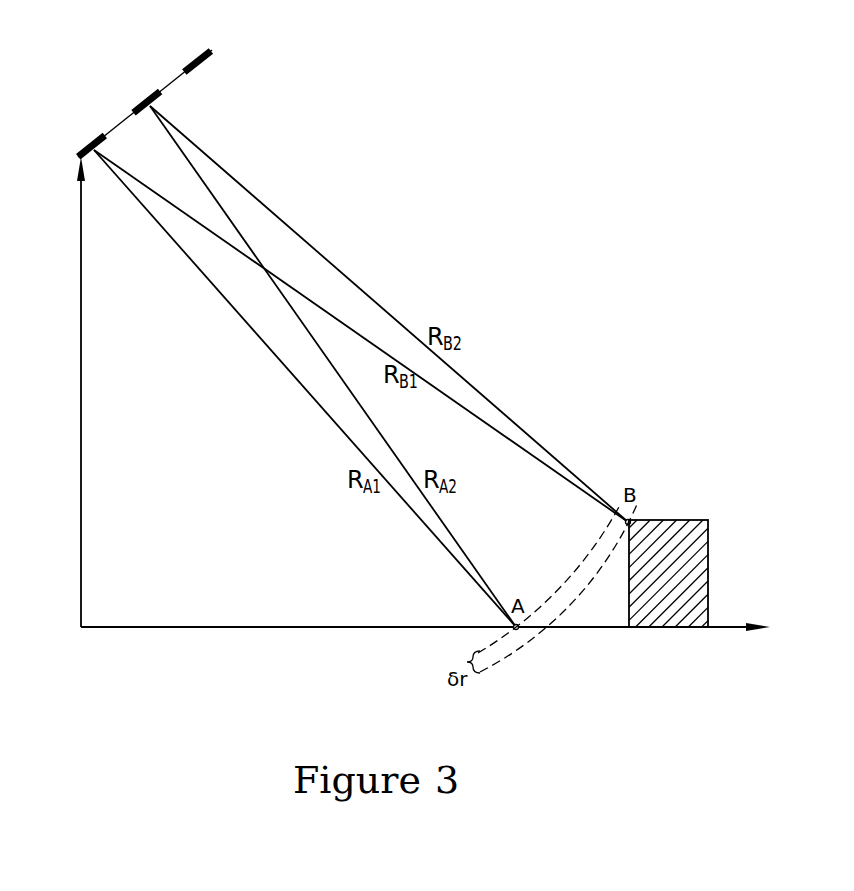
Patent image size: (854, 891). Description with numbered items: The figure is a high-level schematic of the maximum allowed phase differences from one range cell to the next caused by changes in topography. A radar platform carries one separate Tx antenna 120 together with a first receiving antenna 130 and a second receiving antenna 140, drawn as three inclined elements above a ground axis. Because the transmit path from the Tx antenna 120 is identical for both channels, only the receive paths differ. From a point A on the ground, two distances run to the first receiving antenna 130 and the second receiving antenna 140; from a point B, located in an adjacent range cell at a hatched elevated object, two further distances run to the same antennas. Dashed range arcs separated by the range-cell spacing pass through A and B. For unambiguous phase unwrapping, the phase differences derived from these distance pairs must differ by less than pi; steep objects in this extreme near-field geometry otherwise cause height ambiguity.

The Tx antenna 120 is at (202, 64).
The receiving antenna Rx1 130 is at (155, 101).
The receiving antenna Rx2 140 is at (96, 138).